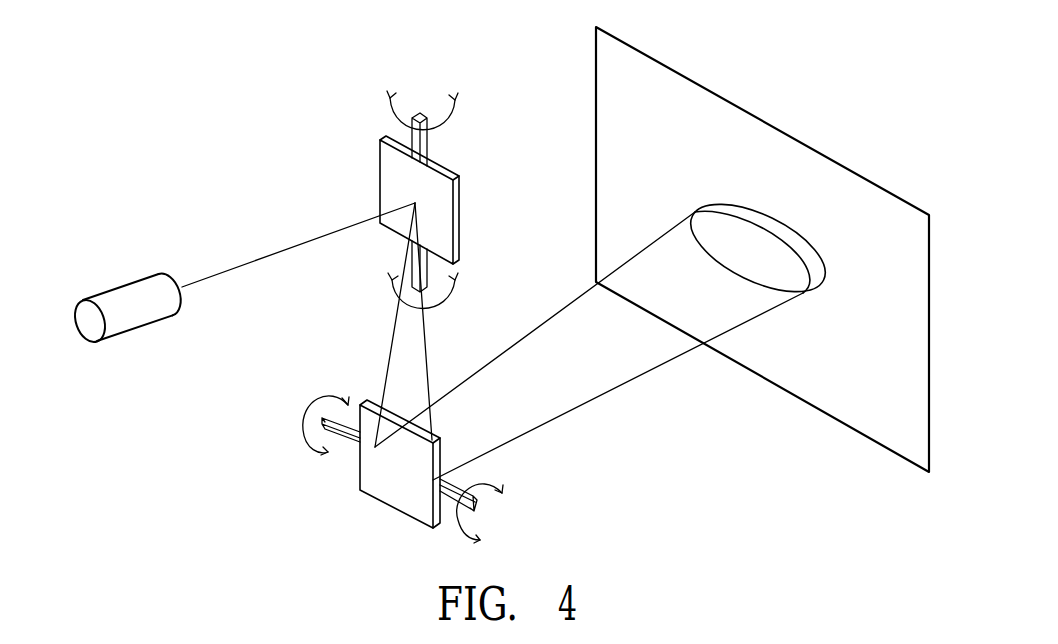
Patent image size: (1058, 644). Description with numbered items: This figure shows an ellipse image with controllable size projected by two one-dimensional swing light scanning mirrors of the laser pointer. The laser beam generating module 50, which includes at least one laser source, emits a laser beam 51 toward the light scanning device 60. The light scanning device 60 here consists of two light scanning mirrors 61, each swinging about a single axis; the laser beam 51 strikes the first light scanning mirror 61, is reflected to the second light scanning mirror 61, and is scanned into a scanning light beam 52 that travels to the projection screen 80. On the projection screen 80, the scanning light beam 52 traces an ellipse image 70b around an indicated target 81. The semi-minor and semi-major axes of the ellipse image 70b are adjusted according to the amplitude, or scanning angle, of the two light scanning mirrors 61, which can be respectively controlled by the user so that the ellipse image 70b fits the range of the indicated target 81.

The laser beam generating module 50 is at (140, 298).
The laser beam 51 is at (278, 250).
The scanning light beam 52 is at (391, 348).
The light scanning device 60 is at (343, 339).
The light scanning mirror 61 is at (387, 173).
The ellipse image 70b is at (708, 205).
The projection screen 80 is at (732, 102).
The indicated target 81 is at (798, 250).